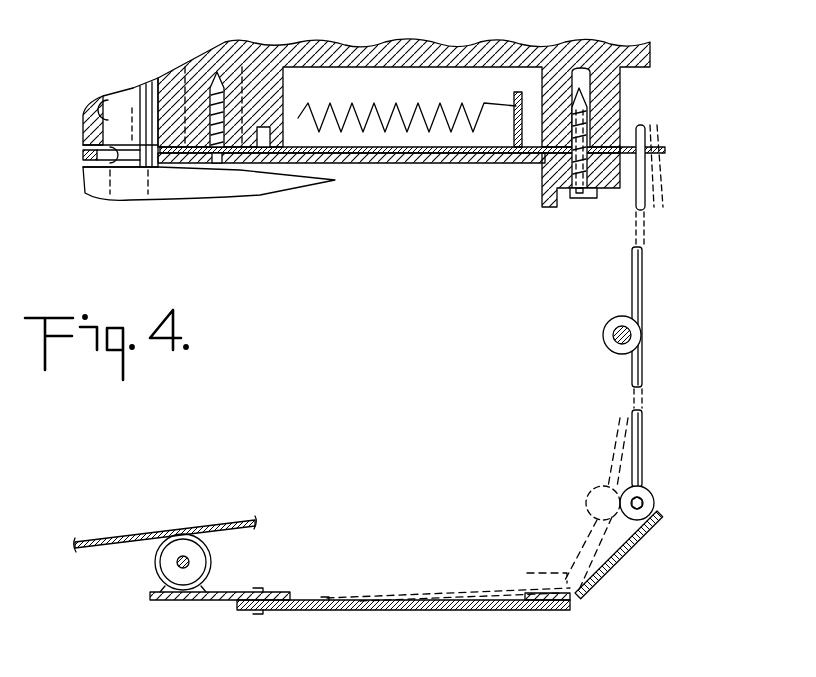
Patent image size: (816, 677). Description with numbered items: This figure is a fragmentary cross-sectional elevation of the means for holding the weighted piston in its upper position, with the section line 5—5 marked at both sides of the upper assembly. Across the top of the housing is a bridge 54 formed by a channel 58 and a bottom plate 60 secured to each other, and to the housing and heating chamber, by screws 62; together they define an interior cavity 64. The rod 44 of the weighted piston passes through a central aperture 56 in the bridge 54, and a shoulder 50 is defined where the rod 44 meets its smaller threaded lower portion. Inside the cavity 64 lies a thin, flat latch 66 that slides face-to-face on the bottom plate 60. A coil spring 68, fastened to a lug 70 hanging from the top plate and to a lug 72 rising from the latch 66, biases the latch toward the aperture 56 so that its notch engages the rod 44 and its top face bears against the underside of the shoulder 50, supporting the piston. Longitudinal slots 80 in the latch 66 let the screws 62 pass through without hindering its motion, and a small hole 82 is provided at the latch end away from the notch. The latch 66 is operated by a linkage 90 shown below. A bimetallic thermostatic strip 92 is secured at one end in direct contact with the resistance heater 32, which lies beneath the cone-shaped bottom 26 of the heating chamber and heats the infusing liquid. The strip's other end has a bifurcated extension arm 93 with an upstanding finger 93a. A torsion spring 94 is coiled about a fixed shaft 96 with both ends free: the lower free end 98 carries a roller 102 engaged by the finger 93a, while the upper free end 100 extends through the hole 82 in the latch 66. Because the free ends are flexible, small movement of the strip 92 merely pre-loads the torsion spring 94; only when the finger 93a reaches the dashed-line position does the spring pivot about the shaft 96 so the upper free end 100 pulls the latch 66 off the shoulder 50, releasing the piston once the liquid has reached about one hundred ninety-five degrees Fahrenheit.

The section line 5- 5 is at (63, 143).
The bottom 26 is at (157, 532).
The resistance heater 32 is at (211, 562).
The rod 44 is at (128, 97).
The shoulder 50 is at (123, 150).
The bridge 54 is at (657, 36).
The aperture 56 is at (110, 110).
The channel 58 is at (347, 53).
The bottom plate 60 is at (437, 163).
The screws 62 is at (595, 198).
The interior cavity 64 is at (430, 78).
The latch 66 is at (402, 153).
The coil spring 68 is at (357, 108).
The lug 70 is at (283, 130).
The lug 72 is at (514, 132).
The longitudinal slots 80 is at (200, 153).
The small hole 82 is at (640, 125).
The linkage 90 is at (553, 410).
The bimetallic thermostatic strip 92 is at (395, 611).
The bifurcated extension arm 93 is at (577, 603).
The finger 93a is at (620, 558).
The torsion spring 94 is at (642, 362).
The fixed shaft 96 is at (612, 337).
The lower free end 98 is at (641, 443).
The upper free end 100 is at (640, 190).
The roller 102 is at (650, 500).